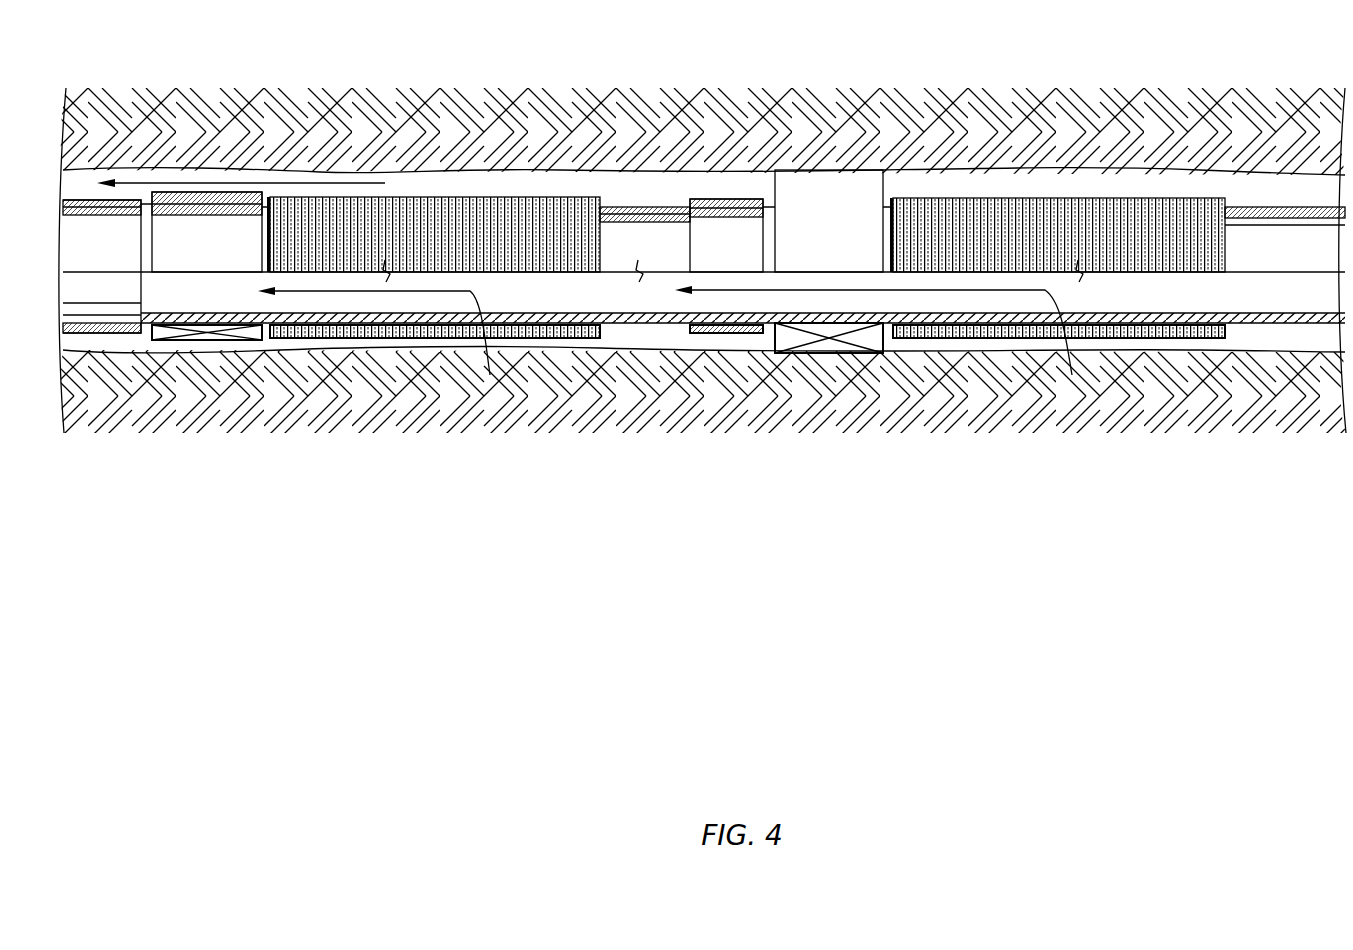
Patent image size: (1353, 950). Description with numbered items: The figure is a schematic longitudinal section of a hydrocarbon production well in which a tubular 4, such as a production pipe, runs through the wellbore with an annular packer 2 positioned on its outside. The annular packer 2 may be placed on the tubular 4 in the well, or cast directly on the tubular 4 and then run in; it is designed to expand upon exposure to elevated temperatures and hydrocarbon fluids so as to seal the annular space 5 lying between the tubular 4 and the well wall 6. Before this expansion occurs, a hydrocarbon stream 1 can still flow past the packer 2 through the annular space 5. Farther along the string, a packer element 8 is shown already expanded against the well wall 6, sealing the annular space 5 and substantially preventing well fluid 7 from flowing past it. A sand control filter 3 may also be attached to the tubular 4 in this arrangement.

The hydrocarbon stream 1 is at (148, 185).
The annular packer 2 is at (213, 193).
The sand control filter 3 is at (410, 197).
The tubular 4 is at (620, 207).
The annular space 5 is at (543, 187).
The well wall 6 is at (967, 178).
The well fluid 7 is at (937, 287).
The packer element 8 is at (810, 168).